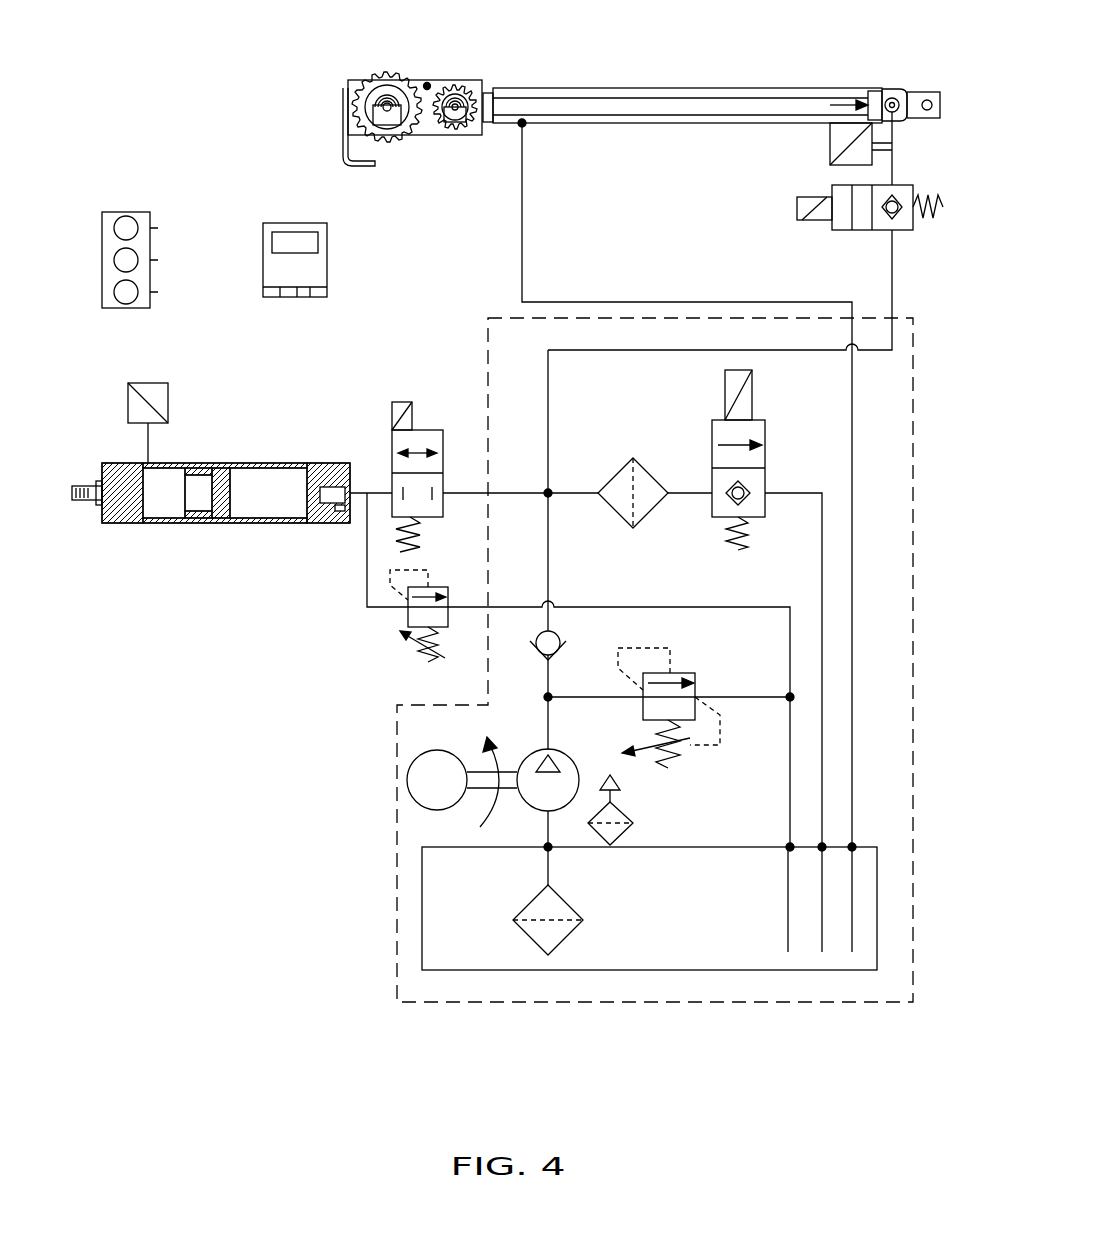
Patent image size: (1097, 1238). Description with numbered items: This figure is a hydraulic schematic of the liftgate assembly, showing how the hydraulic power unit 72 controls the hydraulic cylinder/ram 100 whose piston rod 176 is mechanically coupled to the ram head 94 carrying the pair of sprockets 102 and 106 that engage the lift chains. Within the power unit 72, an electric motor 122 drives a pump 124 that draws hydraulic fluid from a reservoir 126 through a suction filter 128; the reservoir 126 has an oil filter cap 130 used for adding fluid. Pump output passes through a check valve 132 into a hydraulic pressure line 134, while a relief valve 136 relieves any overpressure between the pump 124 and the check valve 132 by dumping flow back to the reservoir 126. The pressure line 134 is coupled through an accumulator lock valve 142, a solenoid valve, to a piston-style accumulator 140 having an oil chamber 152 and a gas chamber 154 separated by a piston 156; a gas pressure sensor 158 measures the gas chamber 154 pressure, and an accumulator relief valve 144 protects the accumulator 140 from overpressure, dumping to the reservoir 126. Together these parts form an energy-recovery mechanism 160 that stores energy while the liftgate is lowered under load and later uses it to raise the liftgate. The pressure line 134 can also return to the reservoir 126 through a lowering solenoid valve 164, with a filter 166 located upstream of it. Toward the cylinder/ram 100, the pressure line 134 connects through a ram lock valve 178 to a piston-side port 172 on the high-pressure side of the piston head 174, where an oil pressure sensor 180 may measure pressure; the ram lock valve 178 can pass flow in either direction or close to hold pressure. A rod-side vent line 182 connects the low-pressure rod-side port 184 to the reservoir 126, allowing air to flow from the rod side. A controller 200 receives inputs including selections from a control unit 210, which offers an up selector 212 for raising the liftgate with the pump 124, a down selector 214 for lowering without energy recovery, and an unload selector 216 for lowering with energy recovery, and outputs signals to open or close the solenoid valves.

The hydraulic power unit 72 is at (913, 470).
The ram head 94 is at (424, 82).
The hydraulic cylinder/ram 100 is at (649, 83).
The sprocket 102 is at (372, 88).
The sprocket 106 is at (458, 90).
The electric motor 122 is at (407, 782).
The pump 124 is at (540, 750).
The reservoir 126 is at (649, 952).
The suction filter 128 is at (568, 935).
The oil filter cap 130 is at (625, 820).
The check valve 132 is at (560, 637).
The hydraulic pressure line 134 is at (596, 644).
The relief valve 136 is at (677, 673).
The accumulator 140 is at (232, 510).
The accumulator lock valve 142 is at (430, 430).
The accumulator relief valve 144 is at (408, 612).
The oil chamber 152 is at (268, 508).
The gas chamber 154 is at (162, 510).
The piston 156 is at (218, 472).
The gas pressure sensor 158 is at (170, 392).
The energy-recovery mechanism 160 is at (222, 483).
The lowering solenoid valve 164 is at (765, 456).
The filter 166 is at (610, 470).
The piston-side port 172 is at (898, 118).
The piston head 174 is at (872, 92).
The piston rod 176 is at (712, 103).
The ram lock valve 178 is at (905, 232).
The oil pressure sensor 180 is at (893, 152).
The rod-side vent line 182 is at (578, 302).
The rod-side port 184 is at (520, 125).
The controller 200 is at (327, 258).
The control unit 210 is at (125, 225).
The up selector 212 is at (122, 216).
The down selector 214 is at (114, 260).
The unload selector 216 is at (114, 292).